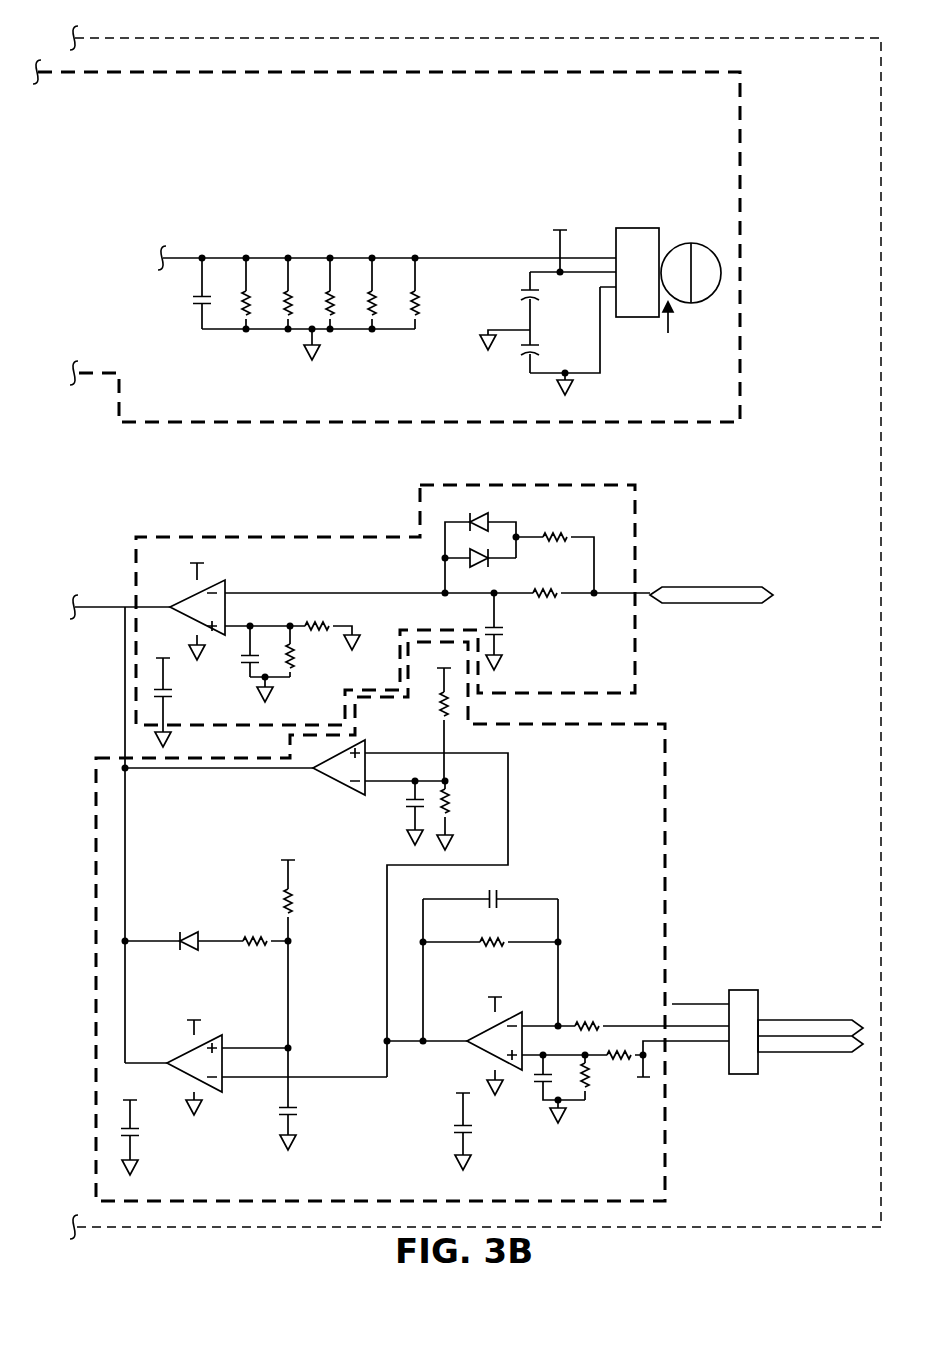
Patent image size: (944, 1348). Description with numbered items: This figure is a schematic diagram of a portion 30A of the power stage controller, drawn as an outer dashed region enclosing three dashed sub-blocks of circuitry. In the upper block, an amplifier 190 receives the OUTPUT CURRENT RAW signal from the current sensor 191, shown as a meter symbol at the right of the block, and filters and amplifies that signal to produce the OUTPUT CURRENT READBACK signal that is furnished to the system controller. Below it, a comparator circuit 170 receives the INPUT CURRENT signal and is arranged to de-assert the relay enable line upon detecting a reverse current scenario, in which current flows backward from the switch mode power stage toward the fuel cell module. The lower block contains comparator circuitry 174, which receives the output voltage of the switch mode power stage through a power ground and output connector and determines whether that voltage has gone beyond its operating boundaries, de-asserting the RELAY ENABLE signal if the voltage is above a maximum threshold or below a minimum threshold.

The portion of the controller 30A is at (690, 38).
The amplifier 190 is at (741, 138).
The current sensor 191 is at (722, 270).
The comparator circuit 170 is at (638, 530).
The comparator circuitry 174 is at (667, 773).